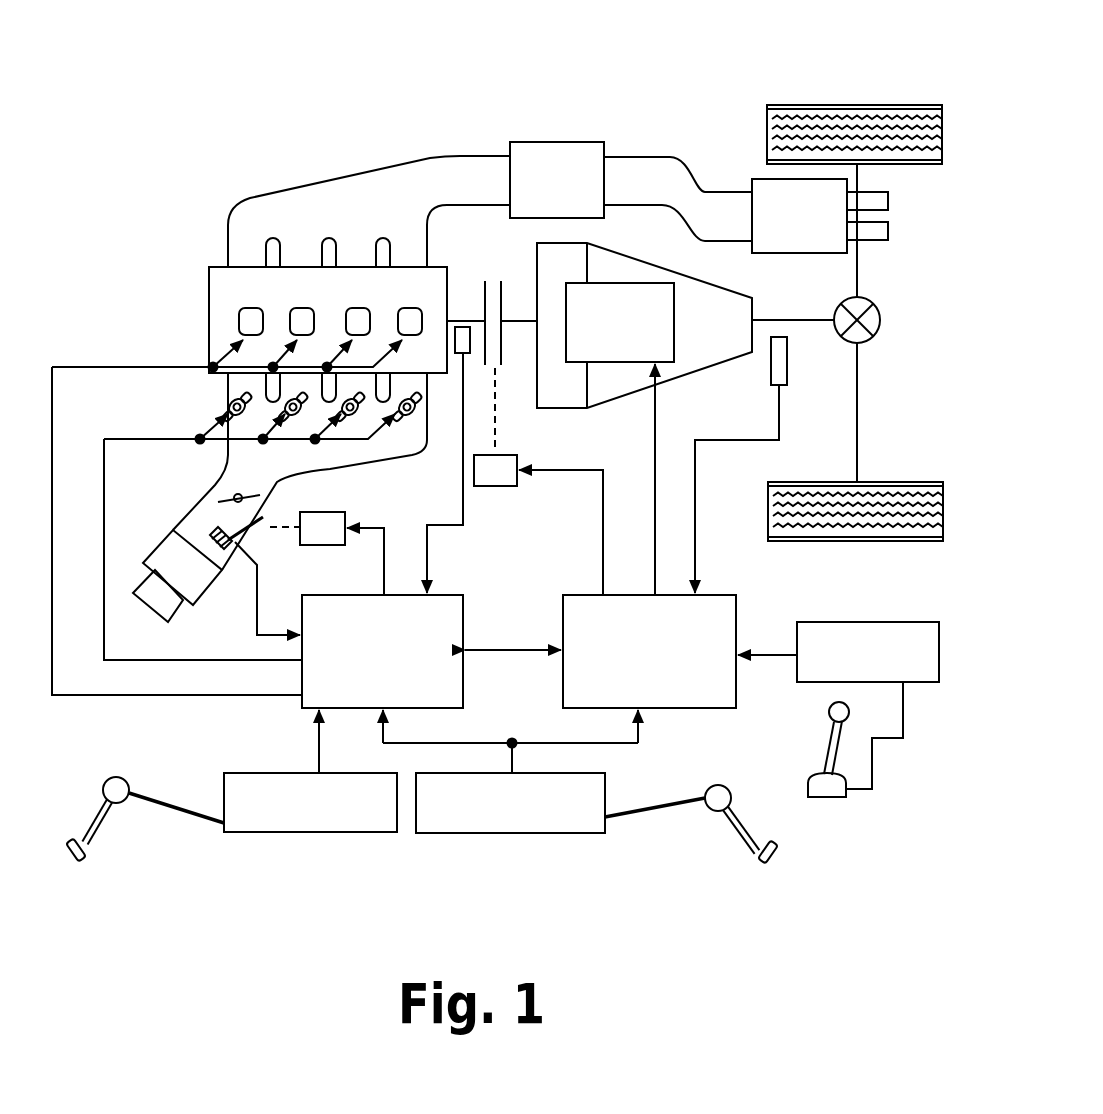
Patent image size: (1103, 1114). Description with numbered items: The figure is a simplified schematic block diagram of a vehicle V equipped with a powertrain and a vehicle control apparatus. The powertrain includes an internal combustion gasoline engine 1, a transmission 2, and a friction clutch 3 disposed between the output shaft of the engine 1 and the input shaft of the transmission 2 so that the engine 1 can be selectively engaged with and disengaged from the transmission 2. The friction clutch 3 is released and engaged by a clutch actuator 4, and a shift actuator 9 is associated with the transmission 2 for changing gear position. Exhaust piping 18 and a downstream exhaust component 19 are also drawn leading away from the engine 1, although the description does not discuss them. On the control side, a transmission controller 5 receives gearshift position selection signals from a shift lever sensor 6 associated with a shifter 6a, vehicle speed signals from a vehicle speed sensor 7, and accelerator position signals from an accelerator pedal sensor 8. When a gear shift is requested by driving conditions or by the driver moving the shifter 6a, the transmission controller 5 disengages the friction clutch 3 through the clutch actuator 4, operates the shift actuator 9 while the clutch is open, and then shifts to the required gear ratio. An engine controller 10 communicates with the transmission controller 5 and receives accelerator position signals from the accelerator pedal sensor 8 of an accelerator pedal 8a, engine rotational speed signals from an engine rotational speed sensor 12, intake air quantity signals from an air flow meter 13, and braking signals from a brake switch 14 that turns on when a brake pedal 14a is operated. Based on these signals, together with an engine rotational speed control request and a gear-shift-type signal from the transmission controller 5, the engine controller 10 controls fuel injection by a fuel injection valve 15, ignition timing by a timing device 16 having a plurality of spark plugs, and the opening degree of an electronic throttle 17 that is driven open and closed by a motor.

The vehicle V is at (712, 88).
The engine 1 is at (208, 226).
The timing device 16 is at (208, 312).
The fuel injection valve 15 is at (228, 400).
The engine rotational speed sensor 12 is at (462, 356).
The air flow meter 13 is at (247, 538).
The electronic throttle 17 is at (350, 503).
The exhaust pipe 18 is at (468, 156).
The catalytic converter 19 is at (588, 142).
The friction clutch 3 is at (494, 280).
The clutch actuator 4 is at (502, 455).
The transmission 2 is at (742, 284).
The shift actuator 9 is at (678, 354).
The vehicle speed sensor 7 is at (788, 368).
The engine controller 10 is at (455, 595).
The transmission controller 5 is at (709, 595).
The gearshift lever sensor 6 is at (890, 621).
The shifter 6a is at (826, 735).
The brake switch 14 is at (224, 802).
The brake pedal 14a is at (110, 779).
The accelerator pedal sensor 8 is at (607, 797).
The accelerator pedal 8a is at (730, 785).